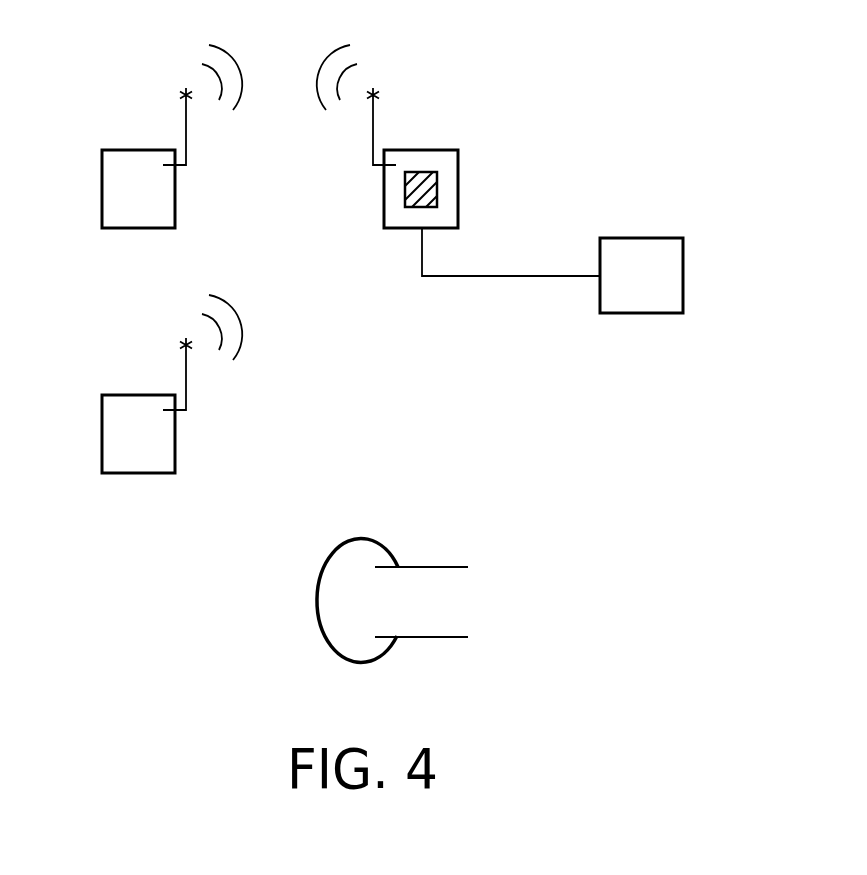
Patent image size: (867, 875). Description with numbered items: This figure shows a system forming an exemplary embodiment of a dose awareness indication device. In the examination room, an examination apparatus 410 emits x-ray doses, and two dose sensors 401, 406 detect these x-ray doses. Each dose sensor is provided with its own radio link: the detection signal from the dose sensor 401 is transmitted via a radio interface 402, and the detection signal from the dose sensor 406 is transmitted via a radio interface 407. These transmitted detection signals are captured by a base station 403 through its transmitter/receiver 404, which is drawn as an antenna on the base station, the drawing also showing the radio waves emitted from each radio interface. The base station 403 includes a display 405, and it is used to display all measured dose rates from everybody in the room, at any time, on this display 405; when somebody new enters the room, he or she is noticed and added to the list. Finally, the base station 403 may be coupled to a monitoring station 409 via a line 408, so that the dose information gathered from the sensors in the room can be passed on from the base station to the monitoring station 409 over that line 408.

The dose sensor 401 is at (102, 190).
The radio interface 402 is at (186, 140).
The base station 403 is at (384, 213).
The transmitter/receiver 404 is at (373, 155).
The display 405 is at (437, 190).
The dose sensor 406 is at (102, 434).
The radio interface 407 is at (186, 385).
The line 408 is at (520, 278).
The monitoring station 409 is at (683, 276).
The examination apparatus 410 is at (317, 601).